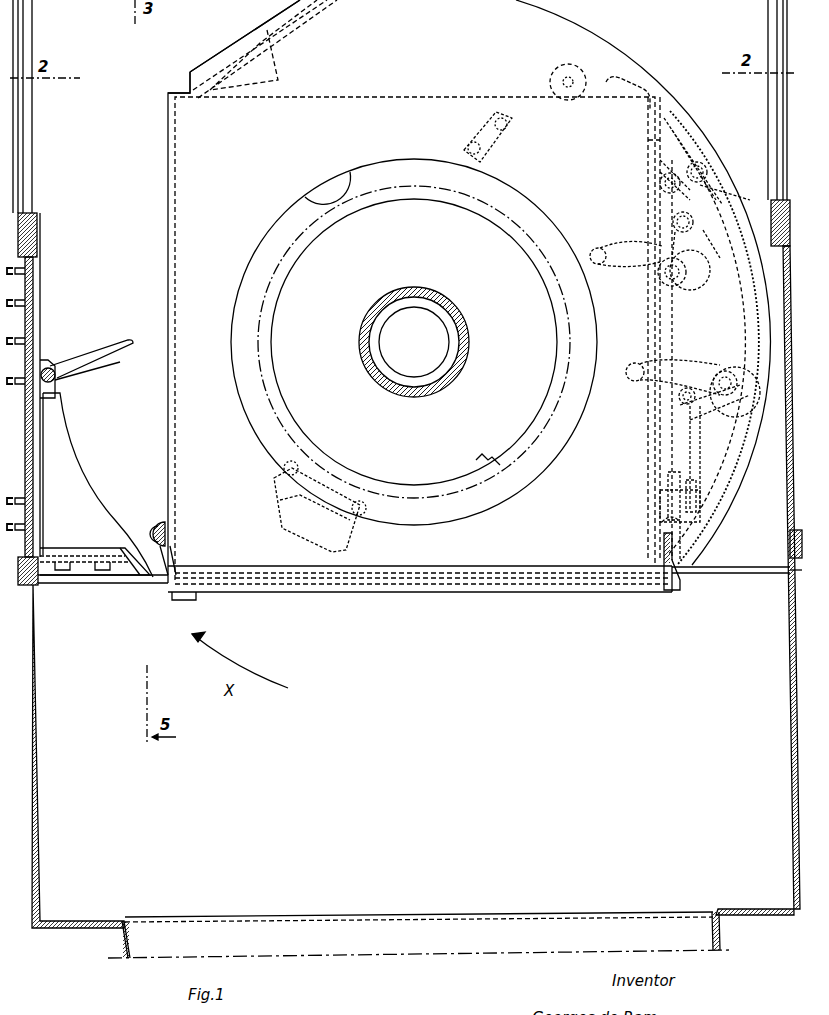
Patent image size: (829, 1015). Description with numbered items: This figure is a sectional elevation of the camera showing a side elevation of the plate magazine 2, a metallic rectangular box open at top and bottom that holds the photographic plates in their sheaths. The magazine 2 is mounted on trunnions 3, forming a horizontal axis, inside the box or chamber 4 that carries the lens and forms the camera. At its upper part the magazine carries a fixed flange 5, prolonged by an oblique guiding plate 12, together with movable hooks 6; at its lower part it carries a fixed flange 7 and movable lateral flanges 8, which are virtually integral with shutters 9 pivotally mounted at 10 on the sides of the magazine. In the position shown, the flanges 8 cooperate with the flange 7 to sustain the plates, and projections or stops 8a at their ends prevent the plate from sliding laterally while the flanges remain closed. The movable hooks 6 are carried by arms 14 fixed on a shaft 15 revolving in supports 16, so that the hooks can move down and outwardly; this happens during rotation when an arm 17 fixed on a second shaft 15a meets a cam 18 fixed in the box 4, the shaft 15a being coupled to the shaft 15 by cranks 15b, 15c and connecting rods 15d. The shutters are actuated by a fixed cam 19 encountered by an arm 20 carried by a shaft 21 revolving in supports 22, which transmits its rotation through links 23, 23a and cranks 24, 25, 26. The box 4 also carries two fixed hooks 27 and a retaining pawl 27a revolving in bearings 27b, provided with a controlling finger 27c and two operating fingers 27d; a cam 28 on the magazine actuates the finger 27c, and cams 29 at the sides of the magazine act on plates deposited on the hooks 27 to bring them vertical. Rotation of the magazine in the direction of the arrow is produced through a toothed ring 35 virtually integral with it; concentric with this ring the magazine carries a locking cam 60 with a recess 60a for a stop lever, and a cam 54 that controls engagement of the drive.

The magazine 2 is at (166, 220).
The trunnions 3 is at (414, 342).
The box or chamber 4 is at (23, 173).
The fixed flange 5 is at (181, 92).
The movable hooks 6 is at (640, 88).
The fixed flange 7 is at (190, 604).
The movable lateral flanges 8 is at (452, 590).
The projections or stops 8a is at (678, 570).
The shutters 9 is at (447, 570).
The pivot 10 is at (158, 528).
The oblique guiding plate 12 is at (268, 43).
The arms 14 is at (662, 128).
The shaft 15 is at (656, 183).
The shaft 15a is at (664, 278).
The crank 15b is at (690, 245).
The crank 15c is at (662, 162).
The connecting rods 15d is at (712, 178).
The supports 16 is at (700, 200).
The arm 17 is at (614, 244).
The cam 18 is at (480, 130).
The fixed cam 19 is at (292, 536).
The arm 20 is at (646, 362).
The shaft 21 is at (730, 370).
The supports 22 is at (718, 372).
The link 23 is at (698, 445).
The links 23a is at (670, 482).
The crank 24 is at (710, 420).
The crank 25 is at (690, 482).
The cranks 26 is at (670, 496).
The fixed hooks 27 is at (85, 560).
The retaining finger or pawl 27a is at (54, 380).
The bearings 27b is at (60, 374).
The controlling finger 27c is at (88, 355).
The operating fingers 27d is at (40, 517).
The cam 28 is at (560, 70).
The cams 29 is at (755, 288).
The toothed ring 35 is at (258, 300).
The cam 54 is at (270, 236).
The locking cam 60 is at (548, 412).
The recess 60a is at (494, 458).